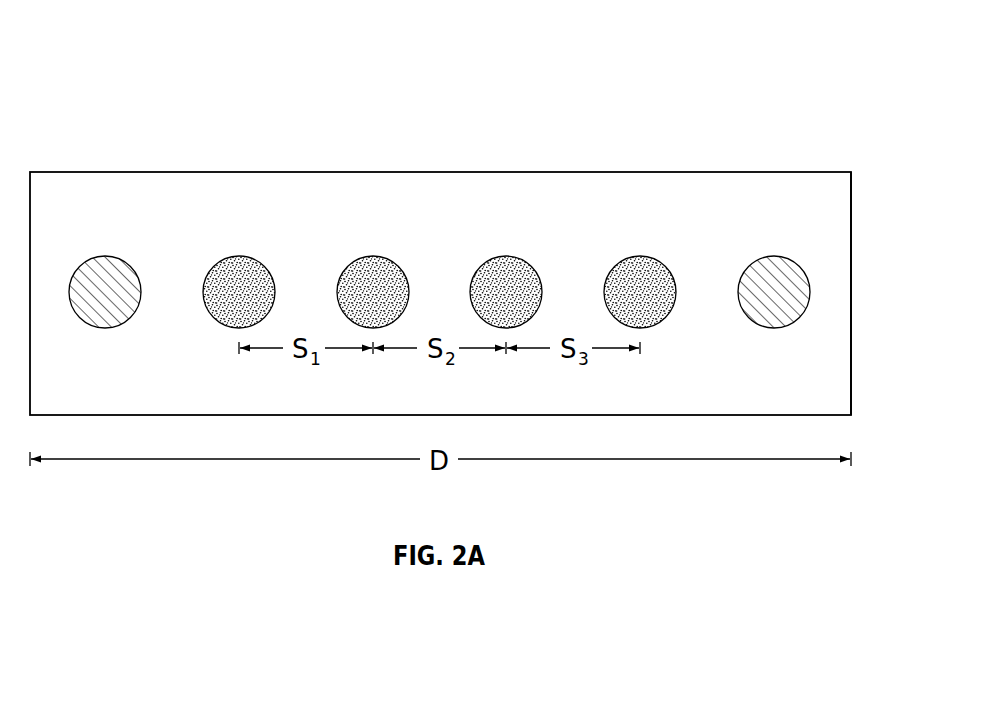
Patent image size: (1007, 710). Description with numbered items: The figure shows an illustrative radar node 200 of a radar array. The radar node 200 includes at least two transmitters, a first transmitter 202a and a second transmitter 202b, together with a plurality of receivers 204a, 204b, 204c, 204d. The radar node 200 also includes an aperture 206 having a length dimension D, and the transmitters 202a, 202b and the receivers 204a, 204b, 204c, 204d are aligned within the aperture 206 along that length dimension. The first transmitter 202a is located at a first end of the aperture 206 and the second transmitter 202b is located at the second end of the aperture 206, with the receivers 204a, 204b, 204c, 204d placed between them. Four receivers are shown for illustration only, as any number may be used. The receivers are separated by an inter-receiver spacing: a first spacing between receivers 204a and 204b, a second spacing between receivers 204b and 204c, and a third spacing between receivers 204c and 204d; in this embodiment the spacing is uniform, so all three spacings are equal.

The radar node 200 is at (103, 62).
The aperture 206 is at (851, 198).
The first transmitter 202a is at (105, 257).
The second transmitter 202b is at (774, 257).
The receiver 204a is at (240, 257).
The receiver 204b is at (374, 257).
The receiver 204c is at (507, 257).
The receiver 204d is at (641, 257).